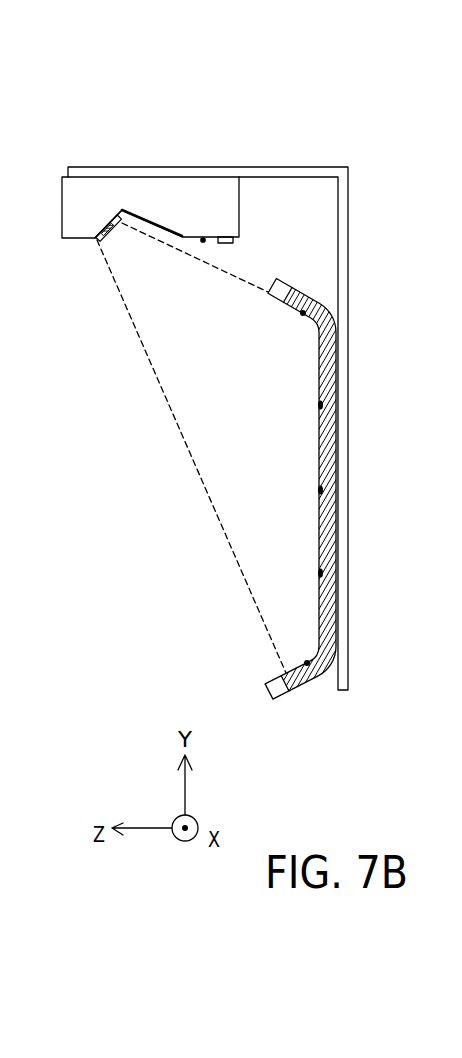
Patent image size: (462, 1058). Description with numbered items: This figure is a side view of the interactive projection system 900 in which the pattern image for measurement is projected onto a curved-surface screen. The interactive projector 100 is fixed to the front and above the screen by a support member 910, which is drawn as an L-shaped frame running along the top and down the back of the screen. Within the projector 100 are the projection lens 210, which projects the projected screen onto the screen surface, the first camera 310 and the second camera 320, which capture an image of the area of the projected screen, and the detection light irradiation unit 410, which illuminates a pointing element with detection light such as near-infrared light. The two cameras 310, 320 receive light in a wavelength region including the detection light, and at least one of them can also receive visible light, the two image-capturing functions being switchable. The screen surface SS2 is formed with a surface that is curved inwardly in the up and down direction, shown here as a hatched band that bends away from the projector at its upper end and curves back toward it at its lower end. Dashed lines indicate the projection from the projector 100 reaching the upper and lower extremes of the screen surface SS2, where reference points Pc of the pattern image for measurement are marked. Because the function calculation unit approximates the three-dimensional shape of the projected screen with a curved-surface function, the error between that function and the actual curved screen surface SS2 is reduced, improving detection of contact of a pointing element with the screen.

The interactive projection system 900 is at (338, 122).
The support member 910 is at (343, 272).
The interactive projector 100 is at (198, 187).
The projection lens 210 is at (95, 239).
The first camera 310 is at (107, 227).
The second camera 320 is at (229, 245).
The detection light irradiation unit 410 is at (203, 243).
The screen surface SS2 is at (274, 298).
The reference points Pc is at (303, 316).